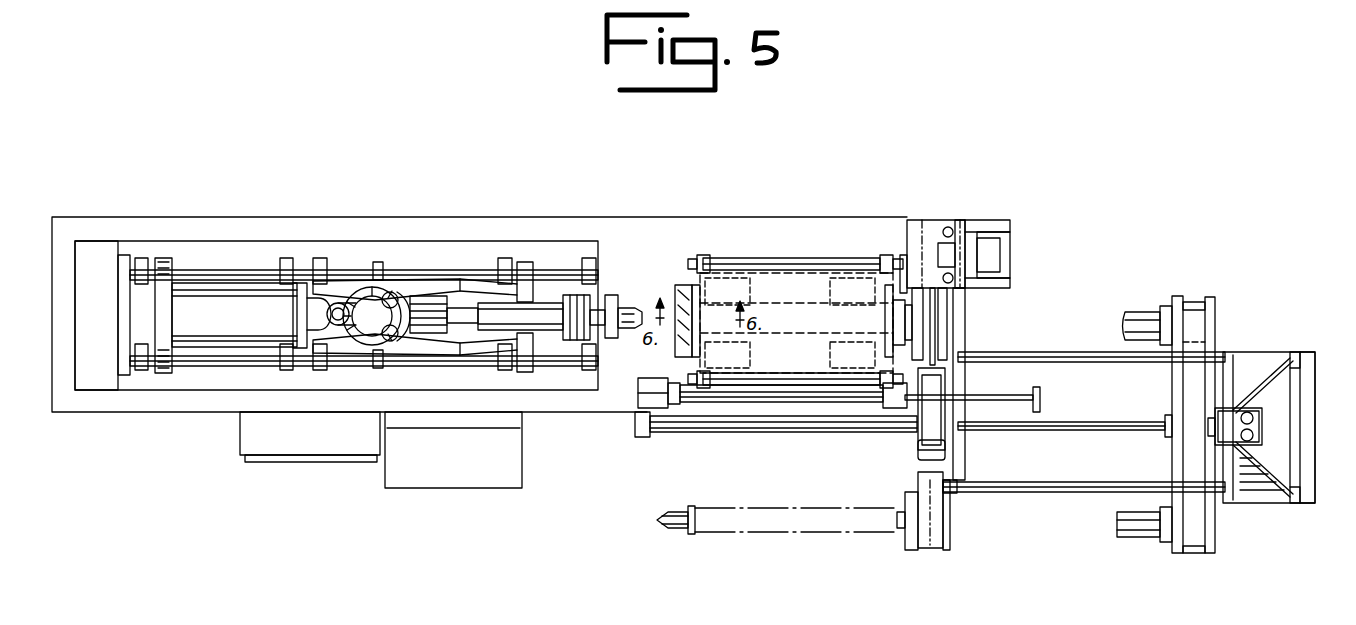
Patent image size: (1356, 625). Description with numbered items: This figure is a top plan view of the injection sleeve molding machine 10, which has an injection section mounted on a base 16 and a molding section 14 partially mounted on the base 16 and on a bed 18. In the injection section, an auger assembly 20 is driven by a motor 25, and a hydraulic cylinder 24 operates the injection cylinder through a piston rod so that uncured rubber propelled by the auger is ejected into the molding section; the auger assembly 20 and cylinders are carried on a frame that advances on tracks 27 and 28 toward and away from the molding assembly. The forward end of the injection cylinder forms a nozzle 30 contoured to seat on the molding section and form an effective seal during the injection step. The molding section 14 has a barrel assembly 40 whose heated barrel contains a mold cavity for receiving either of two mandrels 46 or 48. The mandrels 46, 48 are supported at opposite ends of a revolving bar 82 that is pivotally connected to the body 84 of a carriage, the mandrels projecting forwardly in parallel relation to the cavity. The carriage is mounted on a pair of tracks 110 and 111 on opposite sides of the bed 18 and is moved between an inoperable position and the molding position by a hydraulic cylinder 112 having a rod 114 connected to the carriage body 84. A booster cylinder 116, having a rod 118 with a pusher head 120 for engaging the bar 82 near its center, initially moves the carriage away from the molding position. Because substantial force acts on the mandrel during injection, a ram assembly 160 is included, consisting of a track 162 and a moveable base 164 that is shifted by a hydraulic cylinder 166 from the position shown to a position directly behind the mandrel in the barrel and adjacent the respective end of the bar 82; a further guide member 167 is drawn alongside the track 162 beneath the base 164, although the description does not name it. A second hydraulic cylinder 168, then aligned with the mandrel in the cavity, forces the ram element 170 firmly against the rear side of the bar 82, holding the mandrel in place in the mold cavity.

The injection sleeve molding machine 10 is at (423, 240).
The molding section 14 is at (832, 240).
The base 16 is at (623, 228).
The bed 18 is at (1296, 446).
The auger assembly 20 is at (541, 317).
The hydraulic cylinder 24 is at (252, 322).
The motor 25 is at (327, 316).
The track 27 is at (235, 266).
The track 28 is at (230, 362).
The nozzle 30 is at (633, 306).
The barrel assembly 40 is at (790, 283).
The mandrel 46 is at (1140, 316).
The mandrel 48 is at (795, 530).
The revolving bar 82 is at (1192, 393).
The carriage body 84 is at (1256, 368).
The track 110 is at (1104, 462).
The track 111 is at (1118, 362).
The hydraulic cylinder 112 is at (700, 432).
The rod 114 is at (1066, 426).
The booster cylinder 116 is at (770, 400).
The rod 118 is at (992, 380).
The pusher head 120 is at (1040, 398).
The ram assembly 160 is at (1002, 216).
The track 162 is at (950, 318).
The moveable base 164 is at (934, 226).
The hydraulic cylinder 166 is at (930, 440).
The guide rod 167 is at (937, 338).
The second hydraulic cylinder 168 is at (1008, 254).
The ram element 170 is at (906, 248).